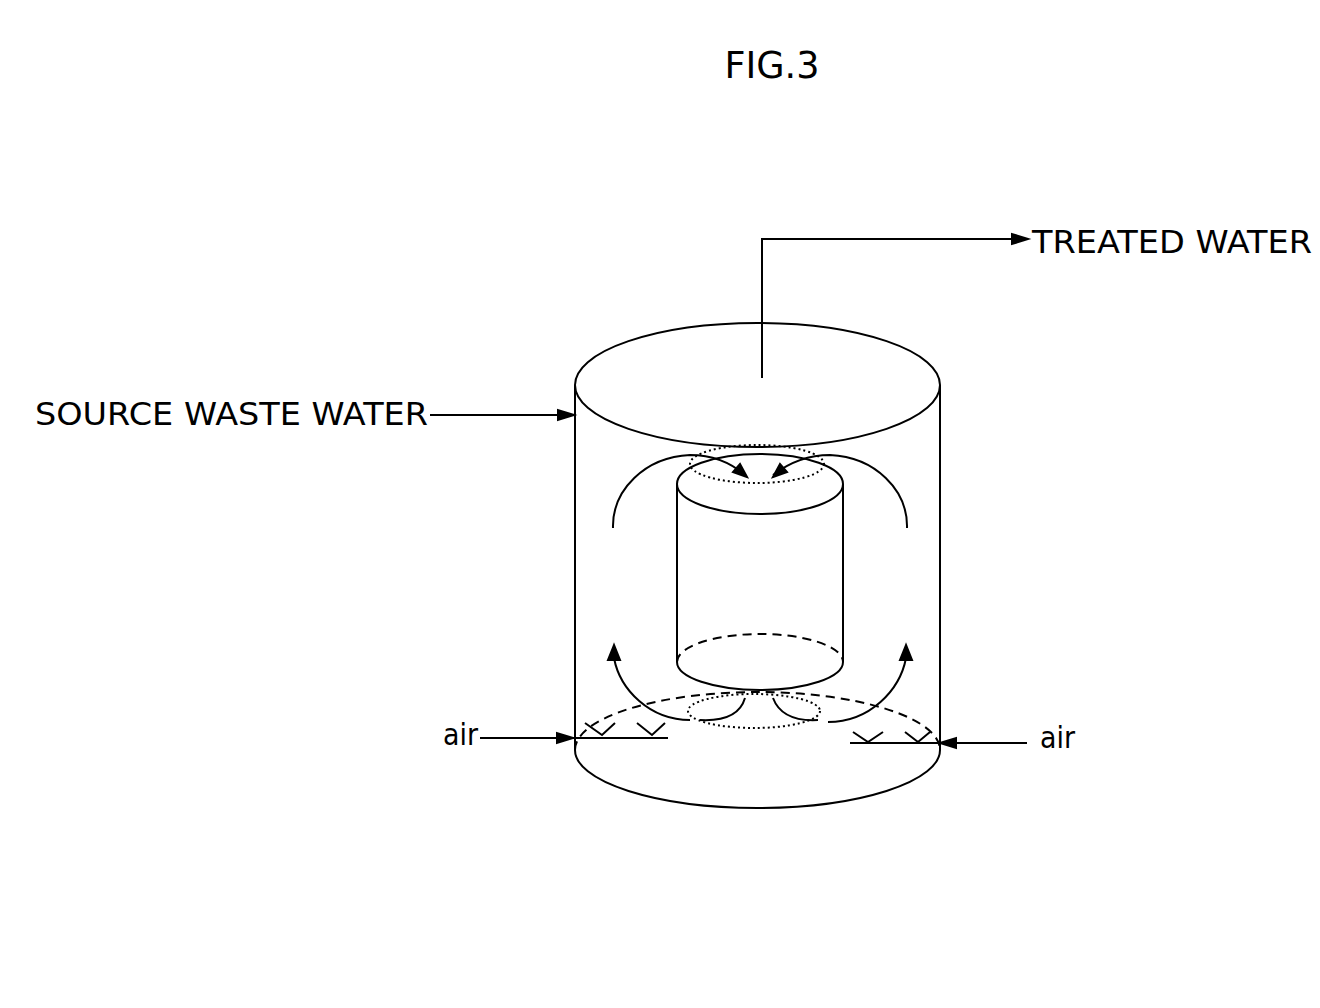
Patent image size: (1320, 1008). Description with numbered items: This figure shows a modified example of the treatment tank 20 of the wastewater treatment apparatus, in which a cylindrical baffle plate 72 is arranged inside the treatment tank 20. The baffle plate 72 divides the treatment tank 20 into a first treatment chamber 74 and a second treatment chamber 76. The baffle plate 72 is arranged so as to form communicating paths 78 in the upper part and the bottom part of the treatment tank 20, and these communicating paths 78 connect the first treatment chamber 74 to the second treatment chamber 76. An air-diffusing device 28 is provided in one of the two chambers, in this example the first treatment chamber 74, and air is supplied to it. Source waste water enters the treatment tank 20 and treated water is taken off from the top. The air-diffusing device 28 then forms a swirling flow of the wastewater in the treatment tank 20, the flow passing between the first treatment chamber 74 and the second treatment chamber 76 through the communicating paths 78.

The treatment tank 20 is at (677, 803).
The air-diffusing device 28 is at (622, 742).
The baffle plate 72 is at (845, 578).
The first treatment chamber 74 is at (578, 575).
The second treatment chamber 76 is at (688, 485).
The communicating paths 78 is at (802, 471).